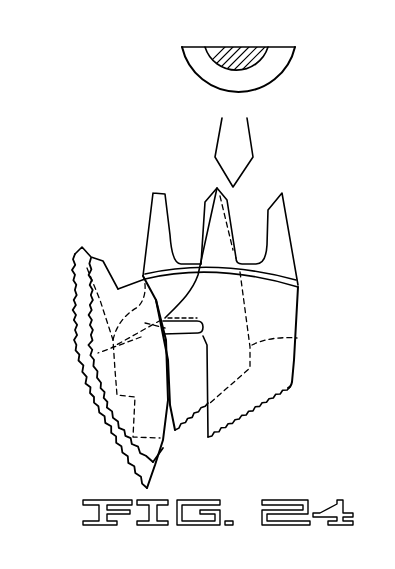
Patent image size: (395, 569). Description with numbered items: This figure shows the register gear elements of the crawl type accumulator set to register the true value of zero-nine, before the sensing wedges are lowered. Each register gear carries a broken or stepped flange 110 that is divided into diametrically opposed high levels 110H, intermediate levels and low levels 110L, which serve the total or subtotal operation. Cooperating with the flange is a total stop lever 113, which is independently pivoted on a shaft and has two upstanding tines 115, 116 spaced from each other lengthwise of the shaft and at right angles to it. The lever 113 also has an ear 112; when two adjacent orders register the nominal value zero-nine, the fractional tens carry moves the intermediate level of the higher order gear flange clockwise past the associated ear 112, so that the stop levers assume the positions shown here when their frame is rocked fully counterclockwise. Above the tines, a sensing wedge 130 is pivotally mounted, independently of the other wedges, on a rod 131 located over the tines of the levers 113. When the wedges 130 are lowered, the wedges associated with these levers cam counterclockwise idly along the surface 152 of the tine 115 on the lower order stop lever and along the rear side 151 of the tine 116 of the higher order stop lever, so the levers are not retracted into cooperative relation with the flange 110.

The stepped flange 110 is at (82, 253).
The low level of flange 110L is at (85, 363).
The high level of flange 110H is at (167, 357).
The ear 112 is at (188, 318).
The total stop lever 113 is at (276, 352).
The tine 115 is at (227, 213).
The tine 116 is at (206, 200).
The sensing wedge 130 is at (290, 78).
The rod 131 is at (247, 50).
The rear side of tine 151 is at (217, 186).
The surface of tine 152 is at (231, 197).